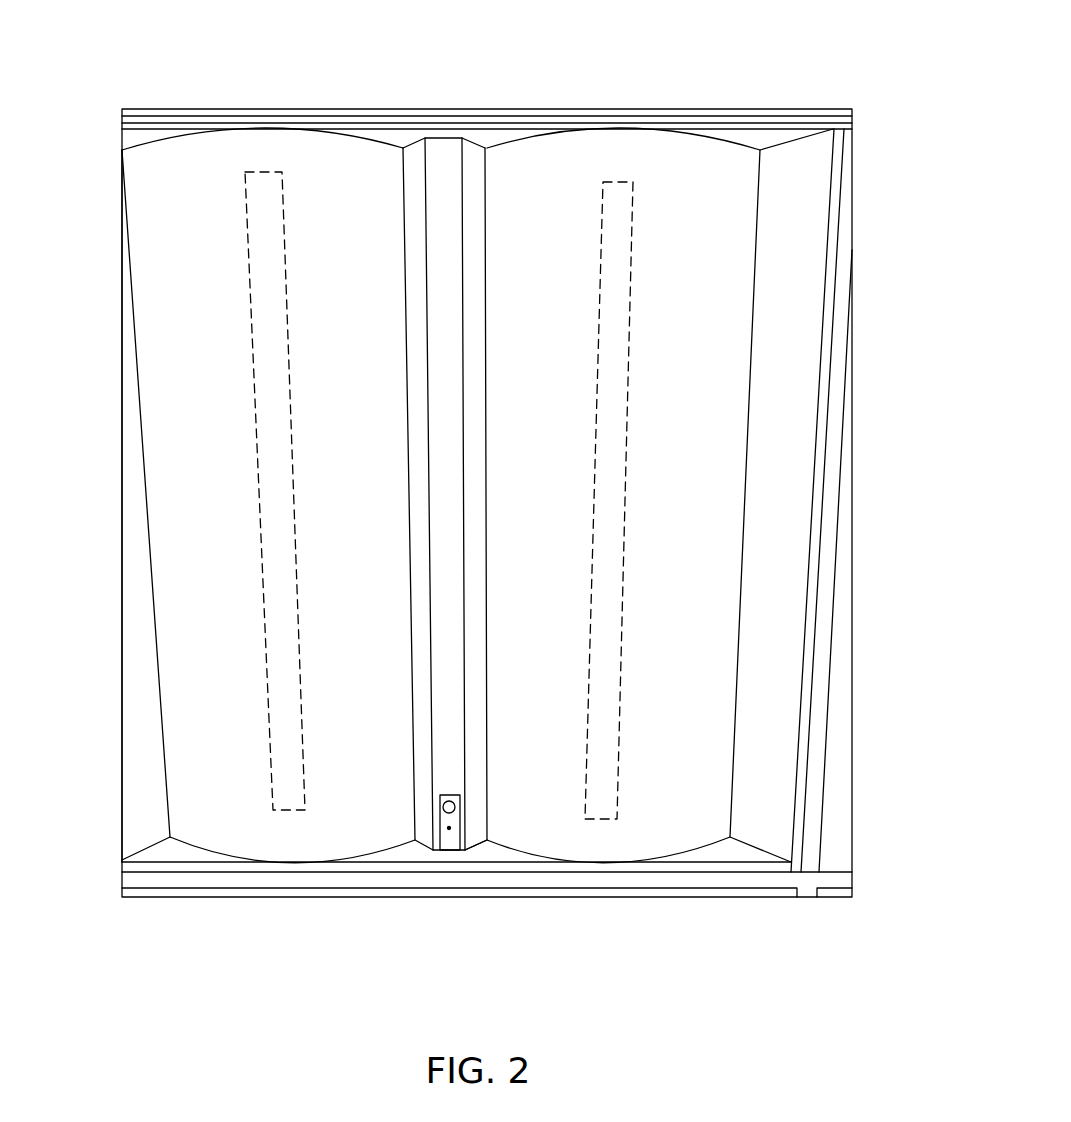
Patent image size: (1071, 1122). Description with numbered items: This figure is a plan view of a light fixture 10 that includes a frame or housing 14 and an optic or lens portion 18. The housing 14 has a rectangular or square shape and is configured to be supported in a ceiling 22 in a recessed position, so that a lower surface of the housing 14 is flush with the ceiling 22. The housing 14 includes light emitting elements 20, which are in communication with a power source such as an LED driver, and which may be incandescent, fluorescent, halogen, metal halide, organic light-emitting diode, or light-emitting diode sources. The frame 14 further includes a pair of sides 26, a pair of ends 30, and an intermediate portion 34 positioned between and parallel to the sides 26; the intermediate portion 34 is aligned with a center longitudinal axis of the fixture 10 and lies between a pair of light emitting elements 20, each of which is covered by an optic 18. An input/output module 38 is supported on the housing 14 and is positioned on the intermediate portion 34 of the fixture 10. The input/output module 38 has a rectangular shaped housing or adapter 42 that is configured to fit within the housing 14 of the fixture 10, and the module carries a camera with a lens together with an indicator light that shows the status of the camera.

The light fixture 10 is at (806, 139).
The frame or housing 14 is at (138, 798).
The optic or lens portion 18 is at (387, 160).
The light emitting elements 20 is at (283, 182).
The ceiling 22 is at (845, 786).
The sides 26 is at (133, 510).
The ends 30 is at (167, 130).
The intermediate portion 34 is at (430, 775).
The input/output module 38 is at (472, 836).
The housing or adapter 42 is at (443, 807).